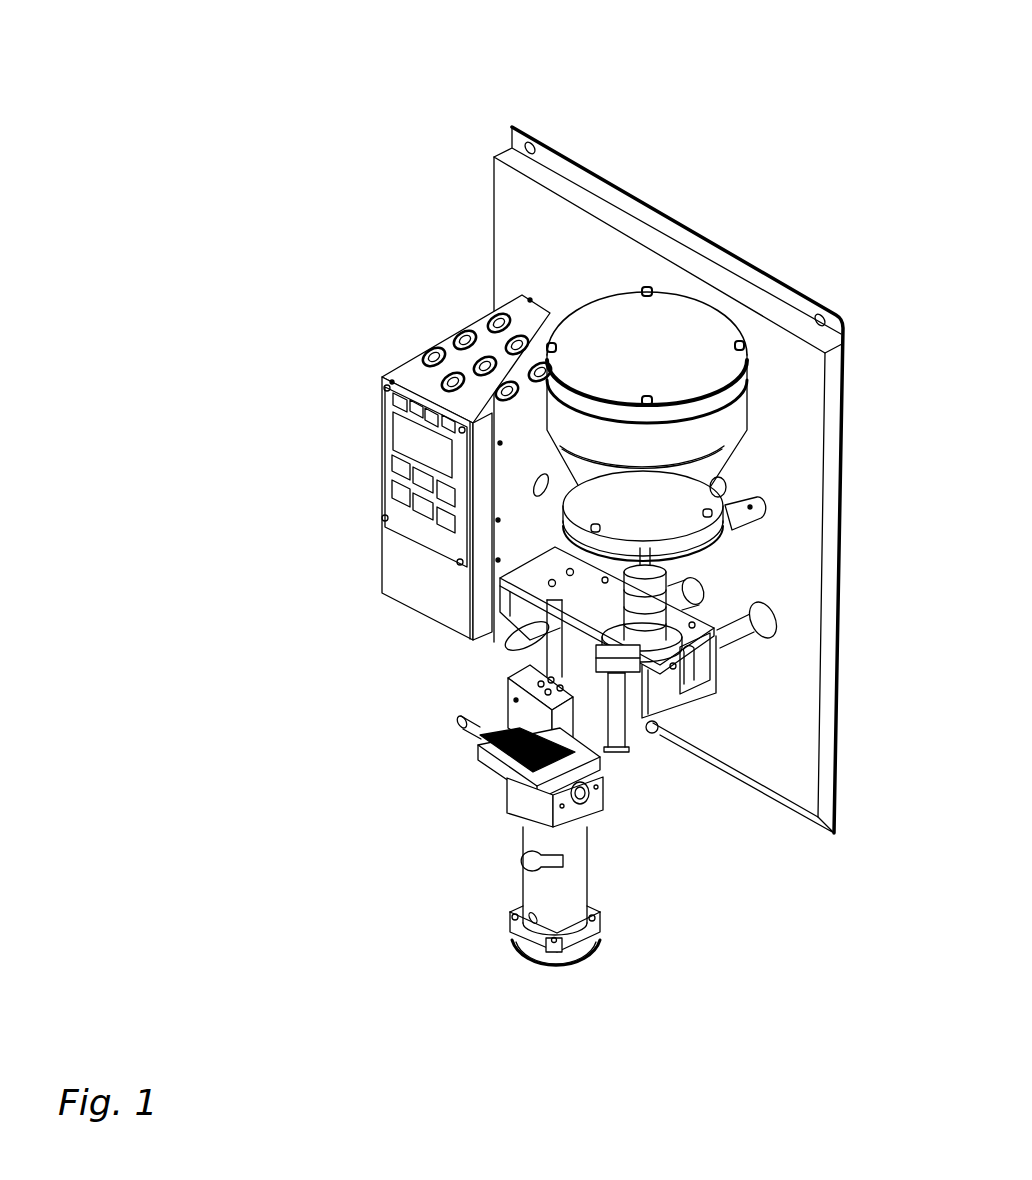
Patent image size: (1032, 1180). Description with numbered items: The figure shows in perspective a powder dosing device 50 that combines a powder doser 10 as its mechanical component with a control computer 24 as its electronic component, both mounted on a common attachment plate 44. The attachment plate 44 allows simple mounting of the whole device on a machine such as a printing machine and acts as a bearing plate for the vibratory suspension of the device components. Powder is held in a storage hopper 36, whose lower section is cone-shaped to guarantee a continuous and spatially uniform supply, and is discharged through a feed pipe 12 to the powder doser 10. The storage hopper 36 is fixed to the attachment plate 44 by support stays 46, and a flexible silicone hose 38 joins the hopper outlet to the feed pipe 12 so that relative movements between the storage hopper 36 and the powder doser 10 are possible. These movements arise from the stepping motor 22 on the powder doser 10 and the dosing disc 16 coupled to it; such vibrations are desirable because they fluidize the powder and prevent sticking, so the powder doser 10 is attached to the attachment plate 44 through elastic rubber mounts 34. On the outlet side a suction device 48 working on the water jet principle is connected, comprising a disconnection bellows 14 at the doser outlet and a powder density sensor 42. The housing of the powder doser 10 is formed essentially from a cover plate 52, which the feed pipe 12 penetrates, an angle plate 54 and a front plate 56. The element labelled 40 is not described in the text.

The powder doser 10 is at (714, 702).
The feed pipe 12 is at (703, 618).
The disconnection bellows 14 is at (513, 641).
The dosing disc 16 is at (633, 744).
The stepping motor 22 is at (590, 724).
The control computer 24 is at (403, 523).
The elastic rubber mounts 34 is at (742, 634).
The storage hopper 36 is at (732, 422).
The flexible silicone hose 38 is at (640, 565).
The guide pin plate 40 is at (465, 733).
The powder density sensor 42 is at (523, 793).
The attachment plate 44 is at (514, 200).
The support stays 46 is at (751, 506).
The suction device 48 is at (494, 782).
The powder dosing device 50 is at (717, 128).
The cover plate 52 is at (508, 576).
The angle plate 54 is at (690, 700).
The front plate 56 is at (515, 665).